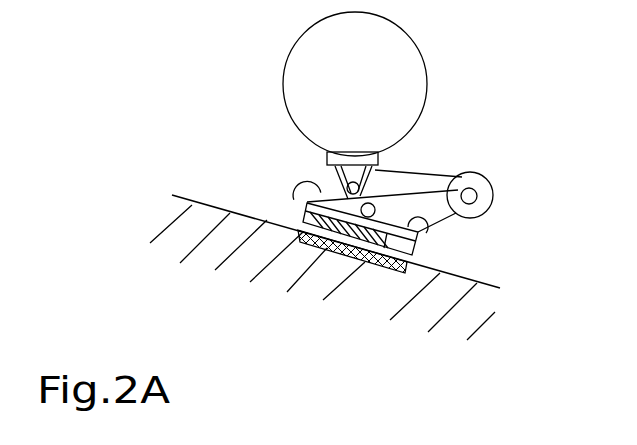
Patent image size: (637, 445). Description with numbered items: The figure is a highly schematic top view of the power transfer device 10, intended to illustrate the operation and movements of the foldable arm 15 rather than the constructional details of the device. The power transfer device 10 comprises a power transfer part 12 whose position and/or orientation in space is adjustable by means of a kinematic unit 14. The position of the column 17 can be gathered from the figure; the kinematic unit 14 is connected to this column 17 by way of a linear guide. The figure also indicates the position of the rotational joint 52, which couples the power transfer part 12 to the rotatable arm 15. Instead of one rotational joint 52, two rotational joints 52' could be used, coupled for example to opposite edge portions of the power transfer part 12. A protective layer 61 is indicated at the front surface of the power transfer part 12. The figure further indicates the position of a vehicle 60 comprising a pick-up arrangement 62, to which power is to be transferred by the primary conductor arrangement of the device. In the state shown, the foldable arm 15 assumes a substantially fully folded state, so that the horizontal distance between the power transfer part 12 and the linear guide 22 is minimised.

The power transfer device 10 is at (241, 56).
The power transfer part 12 is at (373, 264).
The kinematic unit 14 is at (446, 96).
The foldable arm 15 is at (456, 150).
The column 17 is at (408, 44).
The linear guide 22 is at (294, 154).
The rotational joint 52 is at (314, 269).
The rotational joints 52' is at (363, 206).
The vehicle 60 is at (190, 207).
The protective layer 61 is at (296, 230).
The pick-up arrangement 62 is at (323, 246).